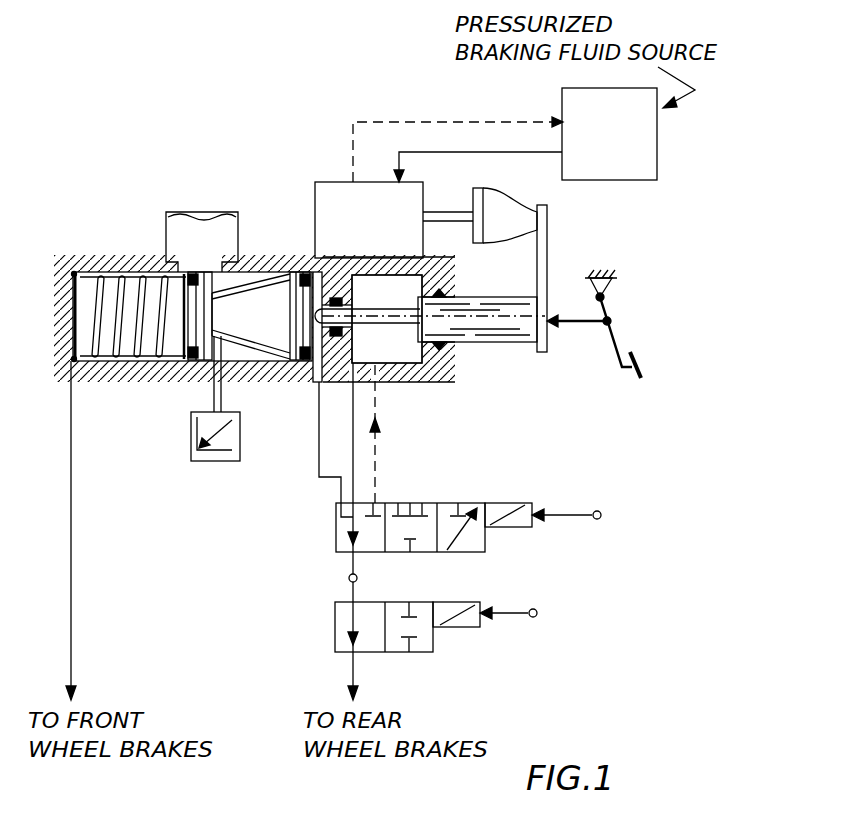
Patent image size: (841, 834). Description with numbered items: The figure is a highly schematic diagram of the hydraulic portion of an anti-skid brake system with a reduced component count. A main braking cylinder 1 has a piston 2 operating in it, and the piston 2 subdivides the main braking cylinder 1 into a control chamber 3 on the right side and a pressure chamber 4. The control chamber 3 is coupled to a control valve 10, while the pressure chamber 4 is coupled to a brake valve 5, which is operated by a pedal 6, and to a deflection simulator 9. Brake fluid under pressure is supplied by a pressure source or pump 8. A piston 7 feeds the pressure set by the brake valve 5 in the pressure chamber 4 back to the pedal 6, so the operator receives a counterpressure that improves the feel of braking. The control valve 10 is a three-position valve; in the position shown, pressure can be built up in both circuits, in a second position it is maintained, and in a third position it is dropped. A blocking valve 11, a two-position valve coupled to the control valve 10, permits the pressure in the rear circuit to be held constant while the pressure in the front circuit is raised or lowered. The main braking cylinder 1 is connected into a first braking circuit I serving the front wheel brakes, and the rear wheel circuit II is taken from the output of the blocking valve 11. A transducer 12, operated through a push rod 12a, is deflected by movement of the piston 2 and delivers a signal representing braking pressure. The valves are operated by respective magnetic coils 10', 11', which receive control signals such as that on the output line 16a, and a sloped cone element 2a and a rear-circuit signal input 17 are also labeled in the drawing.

The main braking cylinder 1 is at (141, 397).
The piston 2 is at (268, 334).
The lower cone element 2a is at (250, 352).
The control chamber 3 is at (316, 372).
The pressure chamber 4 is at (400, 352).
The brake valve 5 is at (332, 208).
The pedal 6 is at (615, 335).
The piston 7 is at (490, 323).
The pressure source or pump 8 is at (640, 157).
The deflection simulator 9 is at (535, 220).
The control valve 10 is at (455, 534).
The magnetic coil 10' is at (547, 492).
The blocking valve 11 is at (423, 633).
The magnetic coil 11' is at (490, 598).
The transducer 12 is at (220, 455).
The push rod 12a is at (176, 438).
The output line 16a is at (610, 528).
The signal input from element 17 (FIG. 2) 17 is at (573, 624).
The first braking circuit I is at (73, 530).
The rear wheel braking circuit II is at (340, 531).